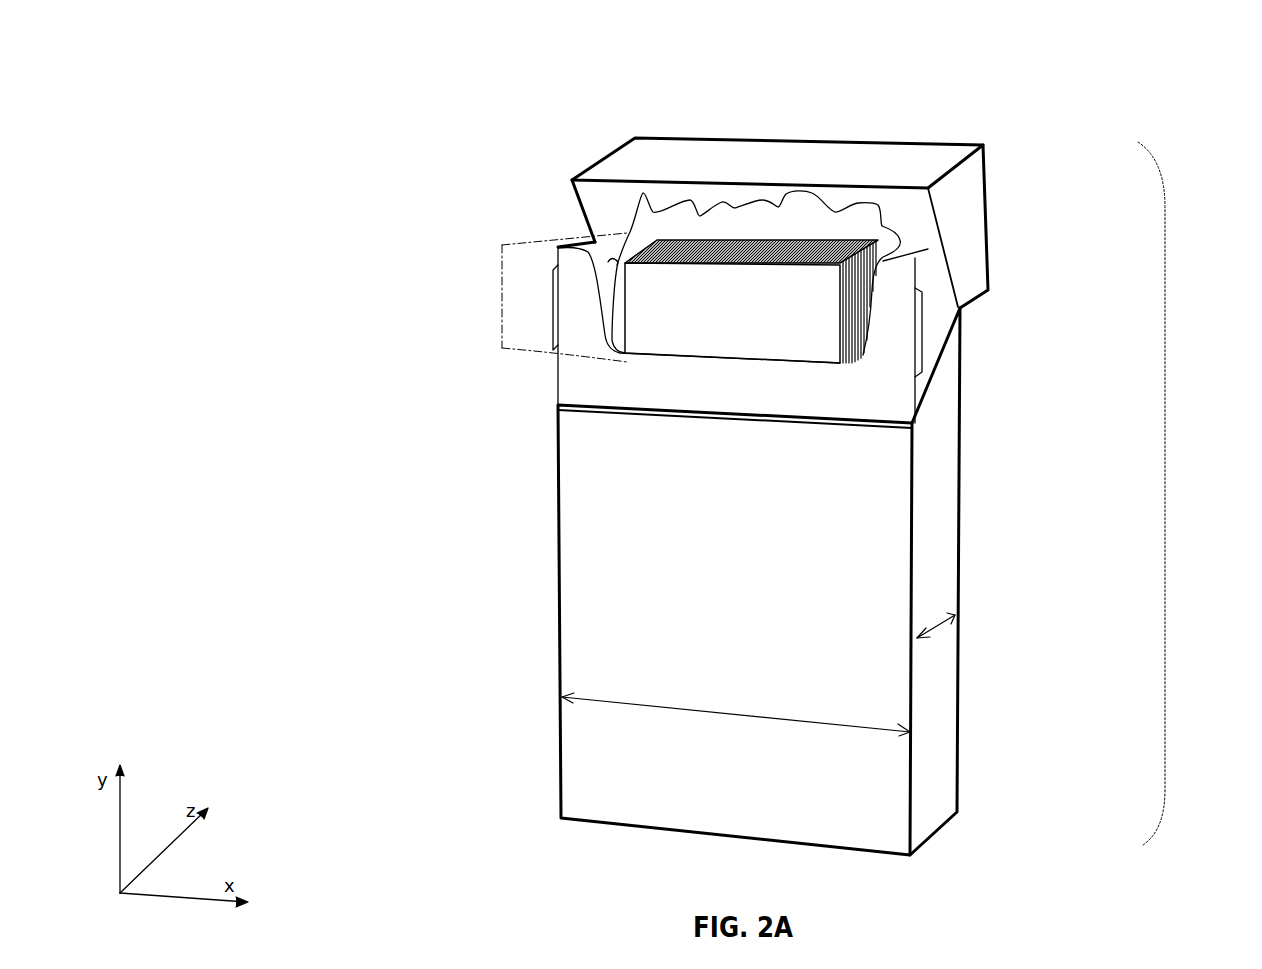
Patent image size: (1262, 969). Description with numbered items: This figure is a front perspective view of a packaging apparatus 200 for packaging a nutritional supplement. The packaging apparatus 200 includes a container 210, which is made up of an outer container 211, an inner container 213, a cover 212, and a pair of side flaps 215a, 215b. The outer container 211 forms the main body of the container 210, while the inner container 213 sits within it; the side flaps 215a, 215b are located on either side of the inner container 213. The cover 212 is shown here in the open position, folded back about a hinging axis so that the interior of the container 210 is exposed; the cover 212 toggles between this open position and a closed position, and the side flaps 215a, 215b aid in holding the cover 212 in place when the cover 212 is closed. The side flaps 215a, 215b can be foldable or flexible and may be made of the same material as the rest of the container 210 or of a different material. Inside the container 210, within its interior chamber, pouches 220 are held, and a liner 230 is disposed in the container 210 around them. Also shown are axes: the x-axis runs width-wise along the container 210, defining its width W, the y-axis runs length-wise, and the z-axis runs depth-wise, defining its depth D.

The packaging apparatus 200 is at (360, 134).
The container 210 is at (1165, 485).
The outer container 211 is at (862, 563).
The cover 212 is at (668, 165).
The inner container 213 is at (875, 413).
The side flap 215a is at (553, 323).
The side flap 215b is at (922, 323).
The pouches 220 is at (502, 298).
The liner 230 is at (865, 227).